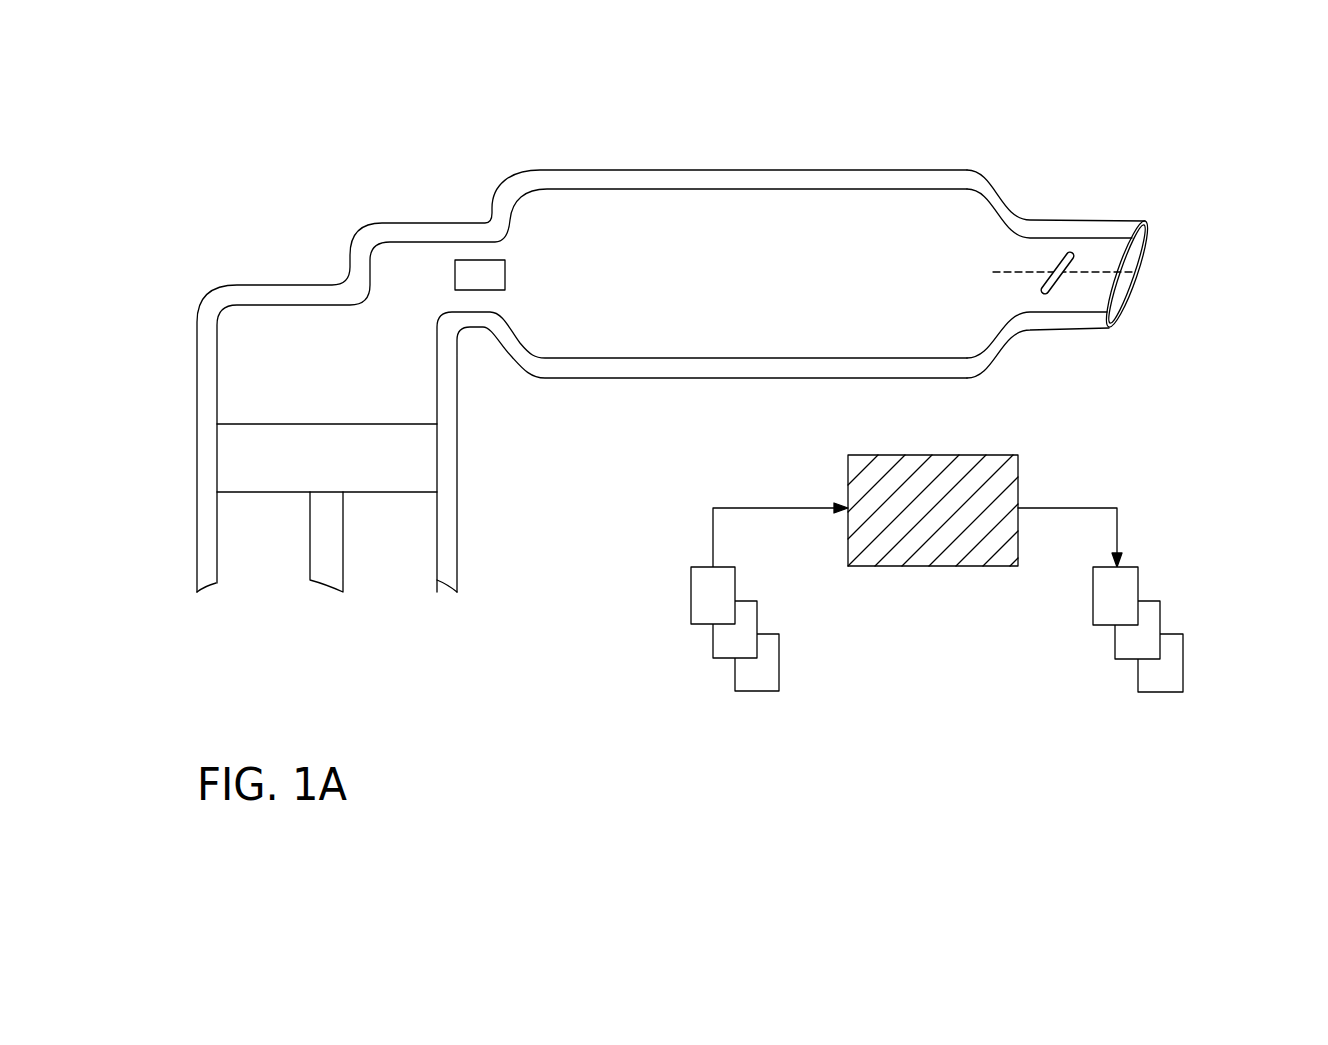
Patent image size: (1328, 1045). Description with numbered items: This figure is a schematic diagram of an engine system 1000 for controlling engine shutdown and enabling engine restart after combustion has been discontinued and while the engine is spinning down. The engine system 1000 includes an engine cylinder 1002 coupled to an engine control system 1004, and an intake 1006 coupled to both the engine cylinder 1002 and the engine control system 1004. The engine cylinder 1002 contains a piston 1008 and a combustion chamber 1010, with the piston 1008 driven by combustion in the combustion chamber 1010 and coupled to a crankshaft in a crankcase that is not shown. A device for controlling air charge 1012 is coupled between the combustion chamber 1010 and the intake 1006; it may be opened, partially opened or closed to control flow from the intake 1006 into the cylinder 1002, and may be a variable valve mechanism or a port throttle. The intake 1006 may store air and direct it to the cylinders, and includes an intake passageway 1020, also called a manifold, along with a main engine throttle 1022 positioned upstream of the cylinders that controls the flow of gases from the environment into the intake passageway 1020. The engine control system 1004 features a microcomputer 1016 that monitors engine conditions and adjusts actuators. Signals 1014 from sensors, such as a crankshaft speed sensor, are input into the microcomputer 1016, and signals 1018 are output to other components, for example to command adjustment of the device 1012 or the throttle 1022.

The engine system 1000 is at (608, 820).
The engine cylinder 1002 is at (512, 332).
The engine control system 1004 is at (937, 524).
The intake 1006 is at (857, 198).
The piston 1008 is at (245, 469).
The combustion chamber 1010 is at (245, 341).
The device for controlling air charge 1012 is at (483, 260).
The signals 1014 is at (690, 602).
The microcomputer 1016 is at (908, 566).
The signals 1018 is at (1183, 645).
The intake passageway 1020 is at (700, 265).
The main engine throttle 1022 is at (1057, 263).